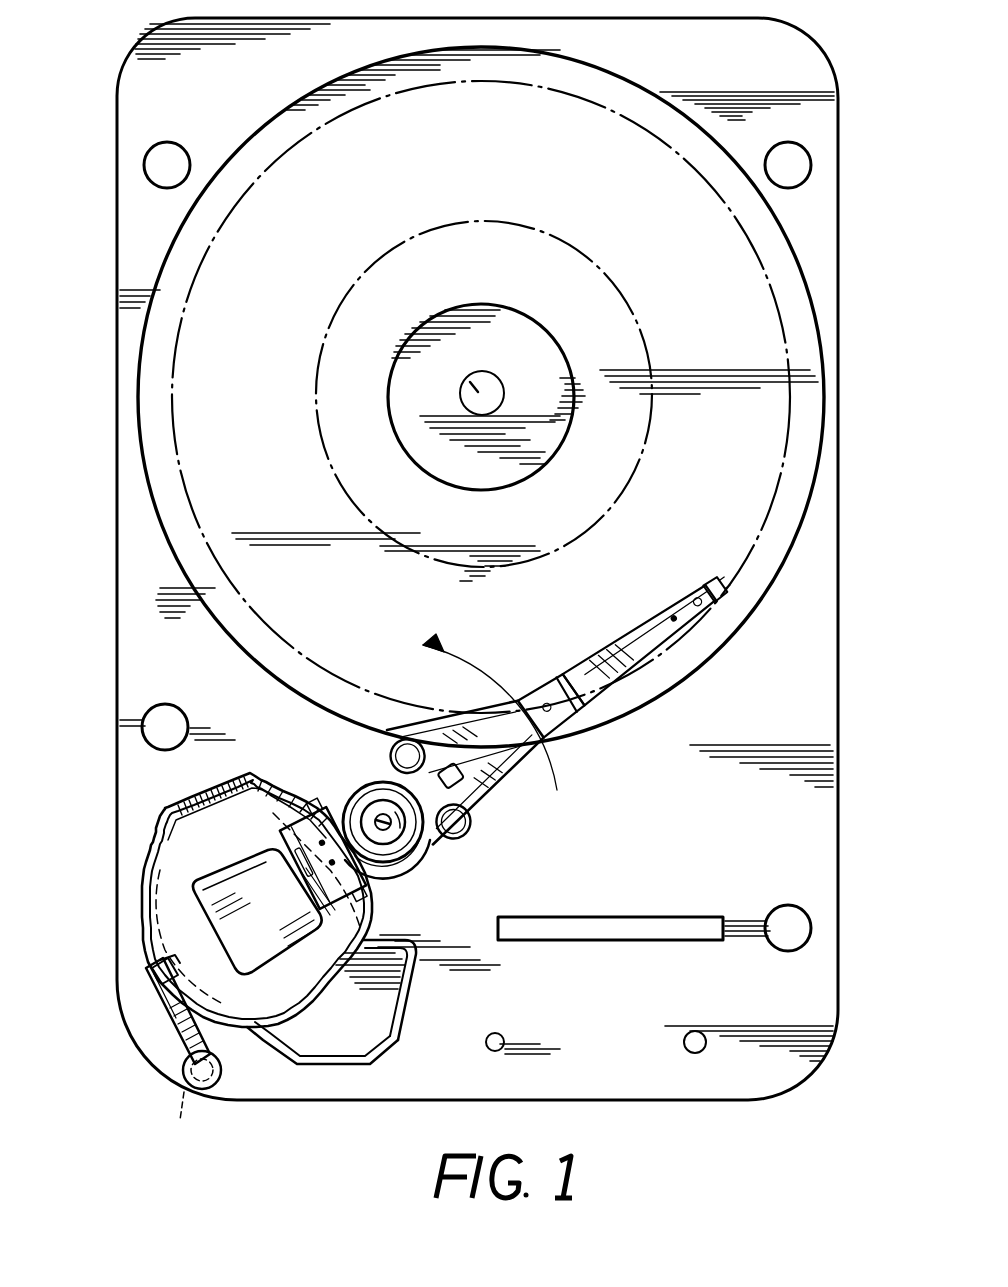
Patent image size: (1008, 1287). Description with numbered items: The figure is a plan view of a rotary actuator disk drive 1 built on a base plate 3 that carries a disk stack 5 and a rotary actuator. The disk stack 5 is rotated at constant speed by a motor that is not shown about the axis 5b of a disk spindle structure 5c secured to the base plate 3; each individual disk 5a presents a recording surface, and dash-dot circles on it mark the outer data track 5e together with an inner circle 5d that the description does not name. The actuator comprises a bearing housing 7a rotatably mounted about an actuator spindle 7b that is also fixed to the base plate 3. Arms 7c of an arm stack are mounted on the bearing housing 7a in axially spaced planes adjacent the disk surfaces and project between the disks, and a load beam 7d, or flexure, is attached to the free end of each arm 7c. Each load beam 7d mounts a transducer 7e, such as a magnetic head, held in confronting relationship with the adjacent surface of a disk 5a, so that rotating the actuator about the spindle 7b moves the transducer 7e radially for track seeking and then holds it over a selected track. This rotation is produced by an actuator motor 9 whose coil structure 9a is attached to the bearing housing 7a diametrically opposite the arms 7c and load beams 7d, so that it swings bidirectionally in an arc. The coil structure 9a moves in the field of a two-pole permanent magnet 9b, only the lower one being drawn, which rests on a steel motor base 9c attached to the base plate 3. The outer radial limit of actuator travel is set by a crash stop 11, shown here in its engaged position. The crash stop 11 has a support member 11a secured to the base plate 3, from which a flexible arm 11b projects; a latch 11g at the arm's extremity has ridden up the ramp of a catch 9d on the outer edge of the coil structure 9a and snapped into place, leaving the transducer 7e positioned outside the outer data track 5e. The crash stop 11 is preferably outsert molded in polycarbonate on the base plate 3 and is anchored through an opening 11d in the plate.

The rotary actuator disk drive 1 is at (845, 535).
The base plate 3 is at (812, 652).
The disk stack 5 is at (735, 272).
The disk 5a is at (823, 385).
The axis 5b is at (480, 370).
The disk spindle structure 5c is at (505, 400).
The inner data track boundary 5d is at (322, 345).
The outer data track 5e is at (188, 443).
The bearing housing 7a is at (425, 842).
The actuator spindle 7b is at (425, 868).
The arm 7c is at (500, 790).
The load beam 7d is at (618, 625).
The transducer 7e is at (706, 584).
The actuator motor 9 is at (328, 992).
The coil structure 9a is at (365, 910).
The permanent magnet 9b is at (368, 1040).
The steel motor base 9c is at (412, 985).
The catch 9d is at (156, 974).
The crash stop 11 is at (160, 1040).
The crash stop support member 11a is at (212, 1090).
The crash stop projection 11b is at (160, 1004).
The opening 11d is at (183, 1115).
The latch 11g is at (163, 966).